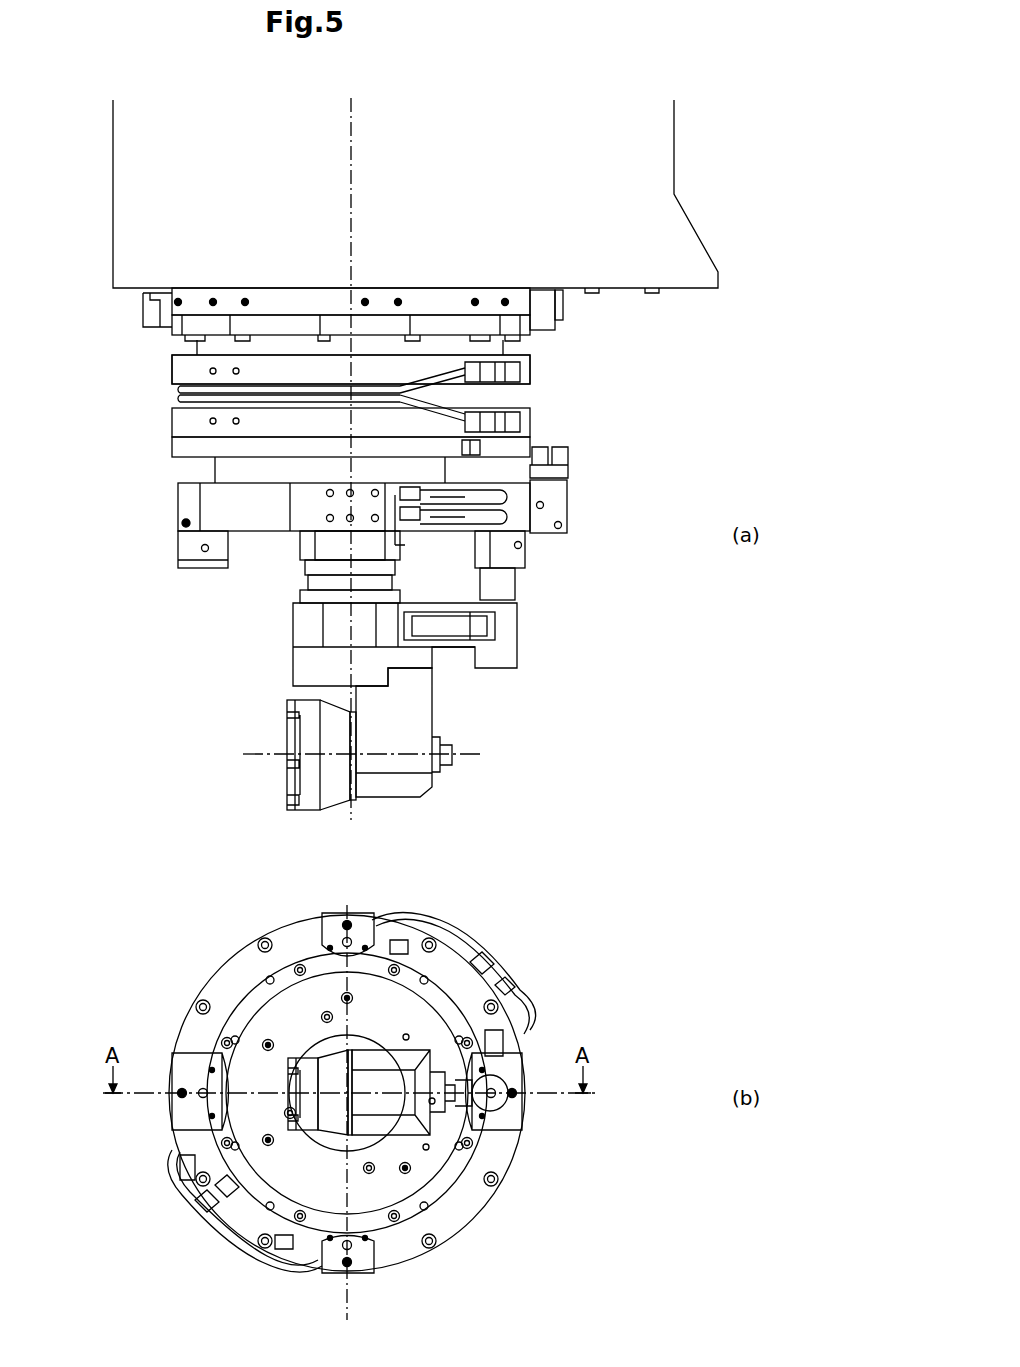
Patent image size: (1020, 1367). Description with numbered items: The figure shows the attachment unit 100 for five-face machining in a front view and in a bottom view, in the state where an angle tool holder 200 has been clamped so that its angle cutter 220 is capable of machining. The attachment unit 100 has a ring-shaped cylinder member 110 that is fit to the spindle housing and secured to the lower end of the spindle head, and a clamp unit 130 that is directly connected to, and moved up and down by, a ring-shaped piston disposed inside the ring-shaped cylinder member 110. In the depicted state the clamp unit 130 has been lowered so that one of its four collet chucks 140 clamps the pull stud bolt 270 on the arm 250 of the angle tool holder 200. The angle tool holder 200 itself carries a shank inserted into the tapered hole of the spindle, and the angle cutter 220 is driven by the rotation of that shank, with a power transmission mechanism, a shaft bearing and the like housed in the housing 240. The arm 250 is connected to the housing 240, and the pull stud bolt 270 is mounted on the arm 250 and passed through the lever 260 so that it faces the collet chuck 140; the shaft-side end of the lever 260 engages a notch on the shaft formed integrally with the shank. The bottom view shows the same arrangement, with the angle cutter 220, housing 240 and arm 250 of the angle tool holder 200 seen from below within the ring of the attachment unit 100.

The attachment unit for five-face machining 100 is at (592, 412).
The ring-shaped cylinder member 110 is at (522, 373).
The clamp unit 130 is at (570, 508).
The collet chuck 140 is at (508, 555).
The angle tool holder 200 is at (572, 718).
The angle cutter 220 is at (290, 780).
The housing 240 is at (430, 705).
The arm 250 is at (515, 640).
The lever 260 is at (432, 588).
The pull stud bolt 270 is at (500, 580).